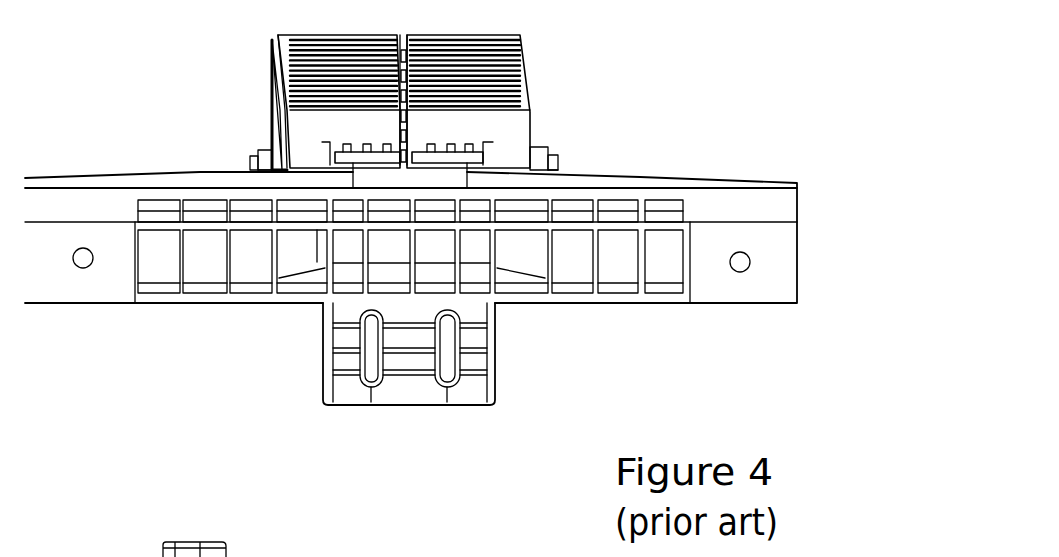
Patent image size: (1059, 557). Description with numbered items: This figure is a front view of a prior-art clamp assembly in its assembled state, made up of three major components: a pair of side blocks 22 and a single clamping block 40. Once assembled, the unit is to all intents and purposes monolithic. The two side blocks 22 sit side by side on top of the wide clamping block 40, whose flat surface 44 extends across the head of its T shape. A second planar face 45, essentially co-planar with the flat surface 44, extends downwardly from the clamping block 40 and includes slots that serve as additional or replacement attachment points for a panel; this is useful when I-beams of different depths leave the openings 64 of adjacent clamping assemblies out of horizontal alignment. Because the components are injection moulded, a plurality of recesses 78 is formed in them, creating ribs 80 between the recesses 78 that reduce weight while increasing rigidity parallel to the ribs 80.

The side blocks 22 is at (277, 78).
The clamping block 40 is at (640, 177).
The flat surface 44 is at (120, 290).
The second planar face 45 is at (410, 390).
The openings 64 is at (87, 270).
The recesses 78 is at (585, 267).
The ribs 80 is at (543, 295).